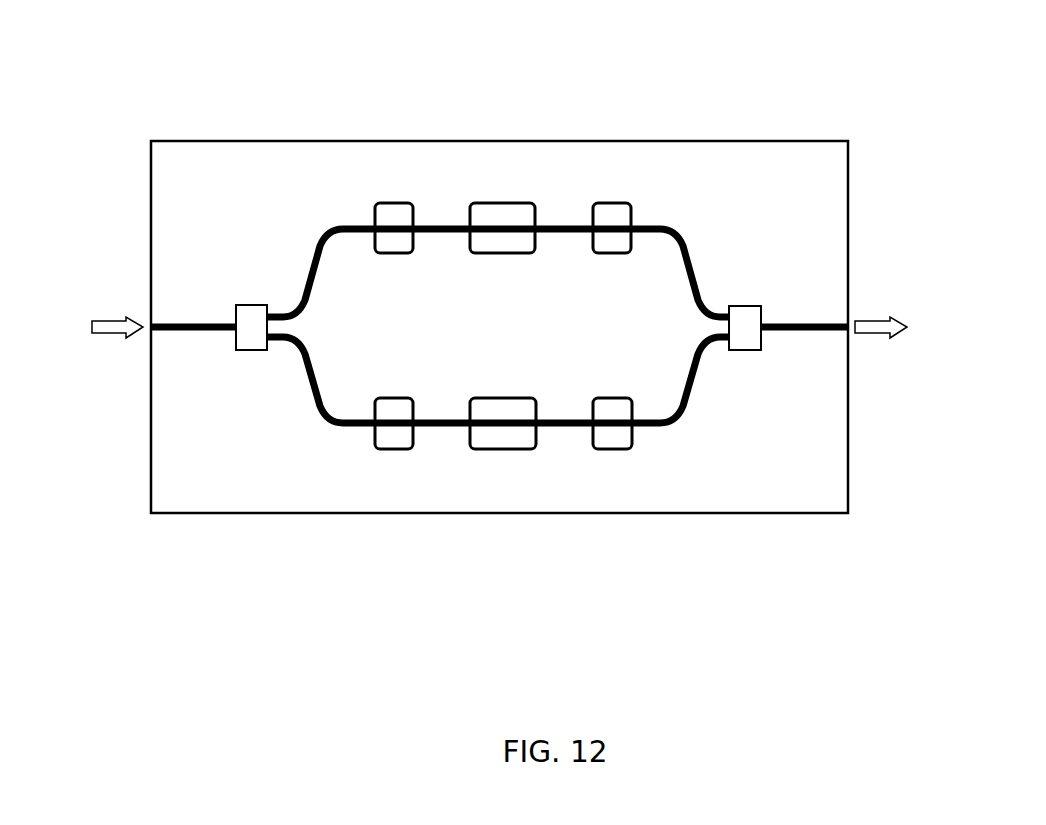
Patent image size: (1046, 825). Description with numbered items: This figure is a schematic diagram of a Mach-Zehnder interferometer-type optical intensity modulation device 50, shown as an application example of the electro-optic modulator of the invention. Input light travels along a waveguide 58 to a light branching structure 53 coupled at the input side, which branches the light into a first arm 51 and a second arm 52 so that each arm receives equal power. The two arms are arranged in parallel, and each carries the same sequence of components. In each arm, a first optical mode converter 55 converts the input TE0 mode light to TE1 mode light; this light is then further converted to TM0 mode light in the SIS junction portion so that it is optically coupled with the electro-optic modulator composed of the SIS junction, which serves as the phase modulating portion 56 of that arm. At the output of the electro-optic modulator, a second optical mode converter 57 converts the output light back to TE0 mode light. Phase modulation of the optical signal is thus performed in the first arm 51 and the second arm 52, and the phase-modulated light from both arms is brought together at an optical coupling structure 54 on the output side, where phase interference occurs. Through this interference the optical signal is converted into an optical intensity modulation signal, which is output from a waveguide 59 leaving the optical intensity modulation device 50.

The optical intensity modulation device 50 is at (650, 538).
The first arm 51 is at (438, 228).
The second arm 52 is at (438, 427).
The light branching structure 53 is at (245, 341).
The optical coupling structure 54 is at (746, 340).
The first optical mode converter 55 is at (393, 413).
The phase modulating portion 56 is at (510, 412).
The second optical mode converter 57 is at (618, 410).
The waveguide 58 is at (190, 323).
The waveguide 59 is at (793, 324).